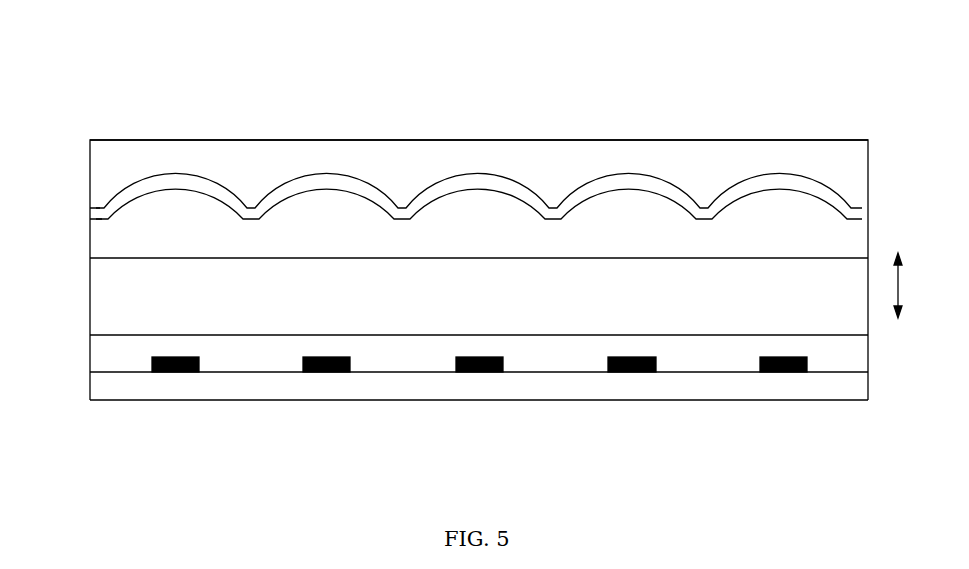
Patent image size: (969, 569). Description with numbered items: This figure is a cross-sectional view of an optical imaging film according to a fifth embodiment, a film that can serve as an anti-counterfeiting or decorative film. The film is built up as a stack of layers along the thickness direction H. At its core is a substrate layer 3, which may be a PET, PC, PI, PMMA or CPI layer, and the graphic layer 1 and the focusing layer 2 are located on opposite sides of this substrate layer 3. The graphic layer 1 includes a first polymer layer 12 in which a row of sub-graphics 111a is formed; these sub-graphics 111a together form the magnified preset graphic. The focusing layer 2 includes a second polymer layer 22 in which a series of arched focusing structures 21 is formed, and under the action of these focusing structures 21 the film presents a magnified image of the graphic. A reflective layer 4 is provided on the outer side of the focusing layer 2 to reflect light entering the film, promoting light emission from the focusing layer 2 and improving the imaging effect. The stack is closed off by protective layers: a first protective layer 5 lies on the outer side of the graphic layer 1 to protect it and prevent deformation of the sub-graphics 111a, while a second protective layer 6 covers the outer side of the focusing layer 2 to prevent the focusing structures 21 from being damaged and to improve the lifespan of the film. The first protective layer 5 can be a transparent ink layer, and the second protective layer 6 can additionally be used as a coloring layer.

The graphic layer 1 is at (460, 454).
The focusing layer 2 is at (446, 60).
The substrate layer 3 is at (103, 302).
The reflective layer 4 is at (100, 208).
The first protective layer 5 is at (828, 392).
The second protective layer 6 is at (818, 145).
The first polymer layer 12 is at (103, 353).
The focusing structures 21 is at (171, 188).
The second polymer layer 22 is at (100, 237).
The sub-graphics 111a is at (176, 373).
The thickness direction H is at (906, 285).